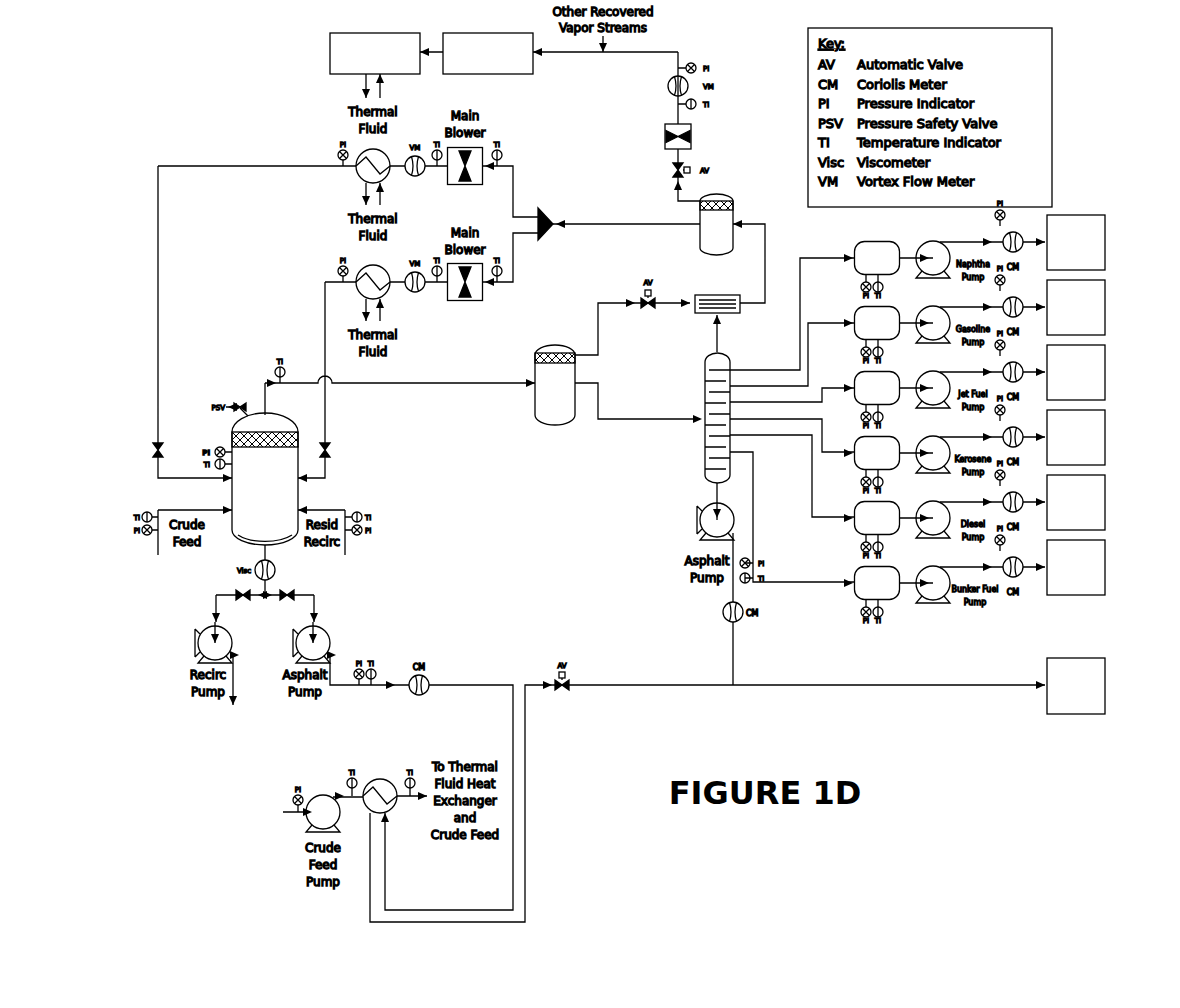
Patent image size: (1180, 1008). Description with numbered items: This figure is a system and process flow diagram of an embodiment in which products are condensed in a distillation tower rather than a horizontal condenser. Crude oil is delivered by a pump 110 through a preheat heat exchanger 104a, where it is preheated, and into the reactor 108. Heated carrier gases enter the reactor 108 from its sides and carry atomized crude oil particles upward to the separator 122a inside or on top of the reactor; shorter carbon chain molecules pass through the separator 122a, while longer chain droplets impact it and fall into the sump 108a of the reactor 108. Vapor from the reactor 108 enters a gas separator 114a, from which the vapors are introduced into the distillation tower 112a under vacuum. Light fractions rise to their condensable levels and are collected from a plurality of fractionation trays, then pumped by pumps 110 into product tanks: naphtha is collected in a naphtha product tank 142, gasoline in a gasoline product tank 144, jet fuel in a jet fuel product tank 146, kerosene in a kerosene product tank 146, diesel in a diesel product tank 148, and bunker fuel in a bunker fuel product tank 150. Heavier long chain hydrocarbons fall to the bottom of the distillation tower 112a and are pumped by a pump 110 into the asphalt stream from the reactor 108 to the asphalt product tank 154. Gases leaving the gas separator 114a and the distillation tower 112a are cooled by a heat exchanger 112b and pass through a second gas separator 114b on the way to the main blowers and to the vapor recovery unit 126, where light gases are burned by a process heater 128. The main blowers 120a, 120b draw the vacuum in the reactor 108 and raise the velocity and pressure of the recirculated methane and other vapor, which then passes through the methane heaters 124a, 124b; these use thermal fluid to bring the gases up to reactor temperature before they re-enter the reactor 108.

The preheat heat exchanger 104a is at (380, 786).
The reactor 108 is at (299, 497).
The sump 108a is at (250, 538).
The pump 110 is at (700, 527).
The distillation tower 112a is at (707, 356).
The heat exchanger 112b is at (696, 293).
The gas separator 114a is at (558, 425).
The gas separator 114b is at (733, 196).
The main blower 120a is at (465, 175).
The main blower 120b is at (465, 291).
The separator 122a is at (232, 435).
The methane heater 124a is at (387, 178).
The methane heater 124b is at (387, 294).
The vapor recovery unit 126 is at (488, 45).
The process heater 128 is at (375, 45).
The naphtha product tank 142 is at (1107, 222).
The gasoline product tank 144 is at (1107, 287).
The jet fuel product tank 146 is at (1116, 411).
The diesel product tank 148 is at (1107, 482).
The bunker fuel product tank 150 is at (1107, 547).
The asphalt product tank 154 is at (1107, 665).